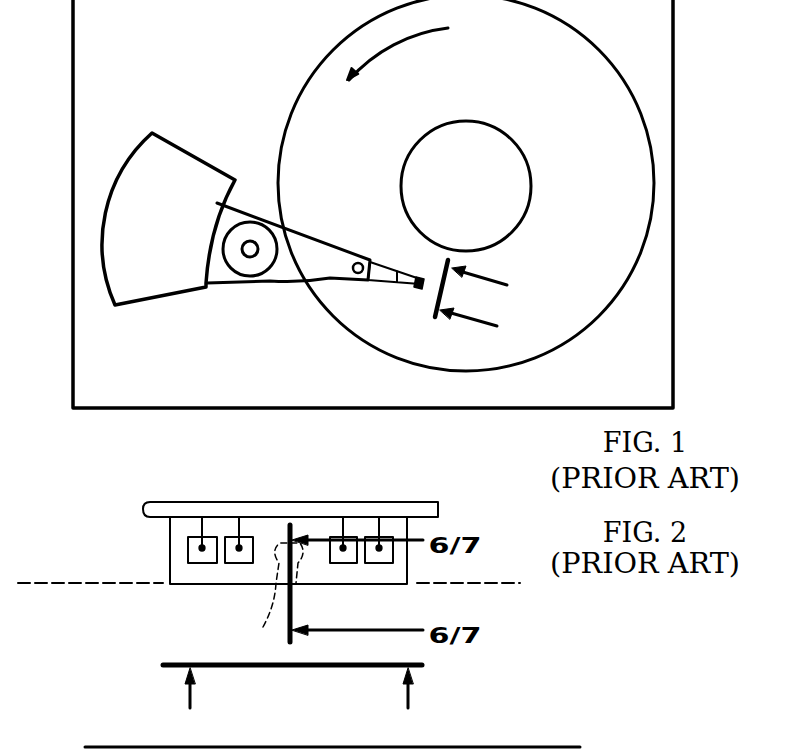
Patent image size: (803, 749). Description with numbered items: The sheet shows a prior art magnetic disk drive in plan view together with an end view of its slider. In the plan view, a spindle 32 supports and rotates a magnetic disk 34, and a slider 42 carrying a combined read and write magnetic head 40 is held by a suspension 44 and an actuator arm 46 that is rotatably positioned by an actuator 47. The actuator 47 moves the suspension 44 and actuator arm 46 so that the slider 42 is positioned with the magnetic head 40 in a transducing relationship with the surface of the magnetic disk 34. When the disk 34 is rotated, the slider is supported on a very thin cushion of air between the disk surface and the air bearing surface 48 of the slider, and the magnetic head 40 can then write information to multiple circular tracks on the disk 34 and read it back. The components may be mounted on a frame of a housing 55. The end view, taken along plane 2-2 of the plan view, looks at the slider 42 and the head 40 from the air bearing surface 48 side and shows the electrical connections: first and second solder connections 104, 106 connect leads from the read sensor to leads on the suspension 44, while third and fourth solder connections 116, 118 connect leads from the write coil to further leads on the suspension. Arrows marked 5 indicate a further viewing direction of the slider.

In FIG. 1, the spindle 32 is at (493, 124).
In FIG. 1, the magnetic disk 34 is at (592, 188).
In FIG. 1, the magnetic head 40 is at (424, 289).
In FIG. 2, the magnetic head 40 is at (268, 621).
In FIG. 1, the slider 42 is at (422, 278).
In FIG. 2, the slider 42 is at (170, 547).
In FIG. 1, the suspension 44 is at (381, 282).
In FIG. 1, the actuator arm 46 is at (295, 227).
In FIG. 1, the actuator 47 is at (188, 147).
In FIG. 2, the air bearing surface 48 is at (63, 585).
In FIG. 2, the housing 55 is at (587, 745).
In FIG. 2, the first solder connection 104 is at (189, 540).
In FIG. 2, the second solder connection 106 is at (358, 537).
In FIG. 2, the third solder connection 116 is at (219, 543).
In FIG. 2, the fourth solder connection 118 is at (323, 537).
In FIG. 1, the plane 2- 2 is at (485, 306).
In FIG. 2, the view direction 5 is at (292, 703).